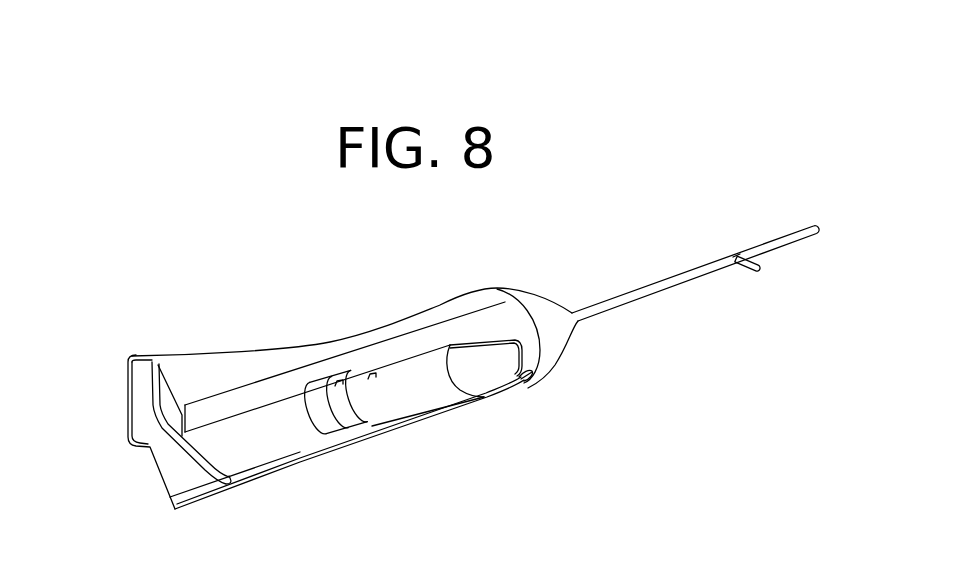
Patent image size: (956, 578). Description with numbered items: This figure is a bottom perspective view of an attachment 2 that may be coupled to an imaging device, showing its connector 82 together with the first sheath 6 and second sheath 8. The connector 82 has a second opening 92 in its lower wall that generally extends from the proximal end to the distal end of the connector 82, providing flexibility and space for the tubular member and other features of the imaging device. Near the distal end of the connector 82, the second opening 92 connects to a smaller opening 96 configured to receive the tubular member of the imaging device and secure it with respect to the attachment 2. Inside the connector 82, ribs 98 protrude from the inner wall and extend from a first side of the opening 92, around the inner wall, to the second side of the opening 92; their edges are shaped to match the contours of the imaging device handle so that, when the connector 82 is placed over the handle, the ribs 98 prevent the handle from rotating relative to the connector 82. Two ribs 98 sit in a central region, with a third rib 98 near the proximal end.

The attachment 2 is at (433, 275).
The first sheath 6 is at (647, 283).
The second sheath 8 is at (768, 242).
The connector 82 is at (220, 363).
The second opening 92 is at (415, 387).
The opening 96 is at (528, 379).
The ribs 98 is at (327, 434).